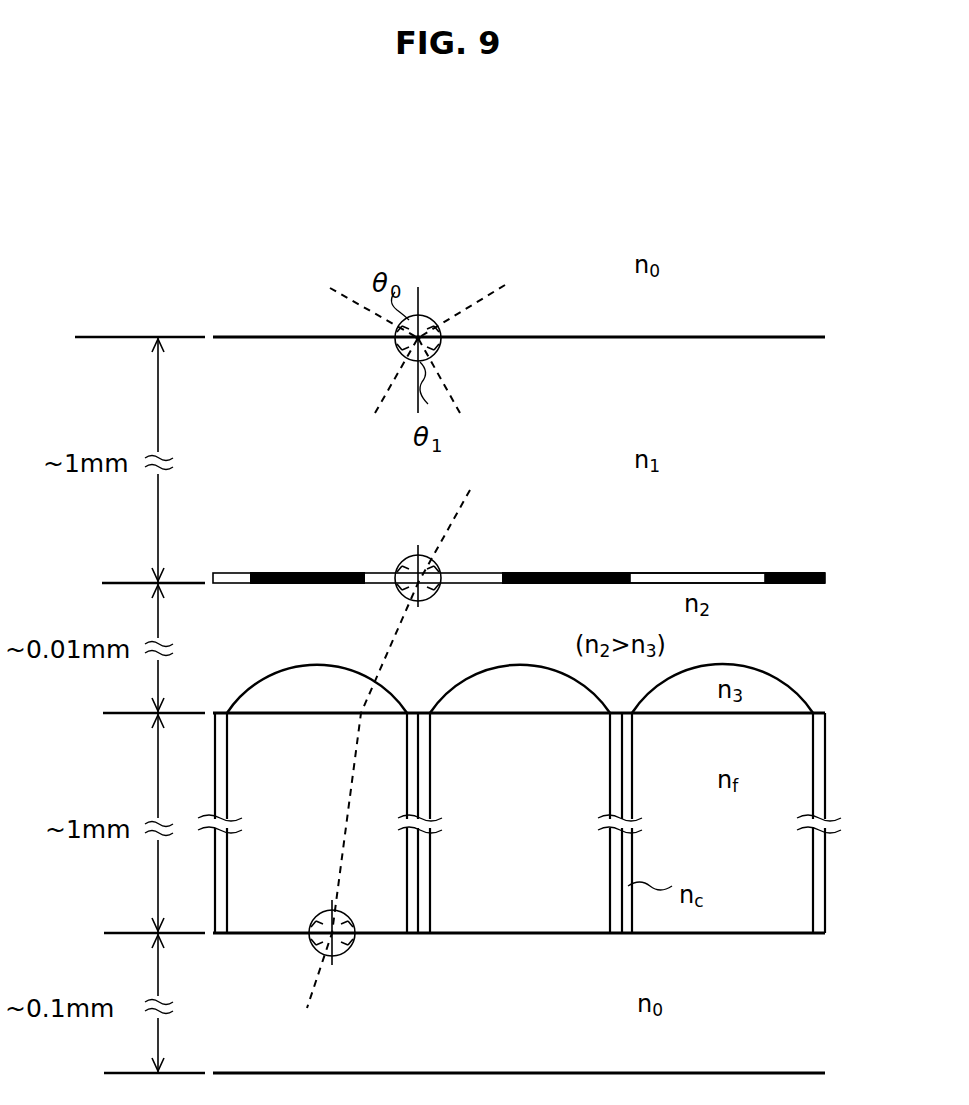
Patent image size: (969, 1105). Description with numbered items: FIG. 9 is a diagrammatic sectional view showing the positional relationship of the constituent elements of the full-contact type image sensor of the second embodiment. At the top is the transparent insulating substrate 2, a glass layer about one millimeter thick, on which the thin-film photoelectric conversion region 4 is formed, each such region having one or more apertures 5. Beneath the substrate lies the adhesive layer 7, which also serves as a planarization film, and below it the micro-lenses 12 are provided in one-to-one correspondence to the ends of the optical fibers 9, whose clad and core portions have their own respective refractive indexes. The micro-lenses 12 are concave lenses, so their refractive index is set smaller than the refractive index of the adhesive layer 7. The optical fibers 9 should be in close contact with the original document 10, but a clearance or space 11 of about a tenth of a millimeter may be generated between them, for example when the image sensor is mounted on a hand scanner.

The transparent insulating substrate 2 is at (798, 456).
The photoelectric conversion region 4 is at (802, 572).
The aperture 5 is at (702, 572).
The adhesive layer 7 is at (800, 649).
The optical fiber 9 is at (790, 764).
The original document 10 is at (793, 1072).
The clearance or space 11 is at (790, 1004).
The micro-lens 12 is at (778, 693).